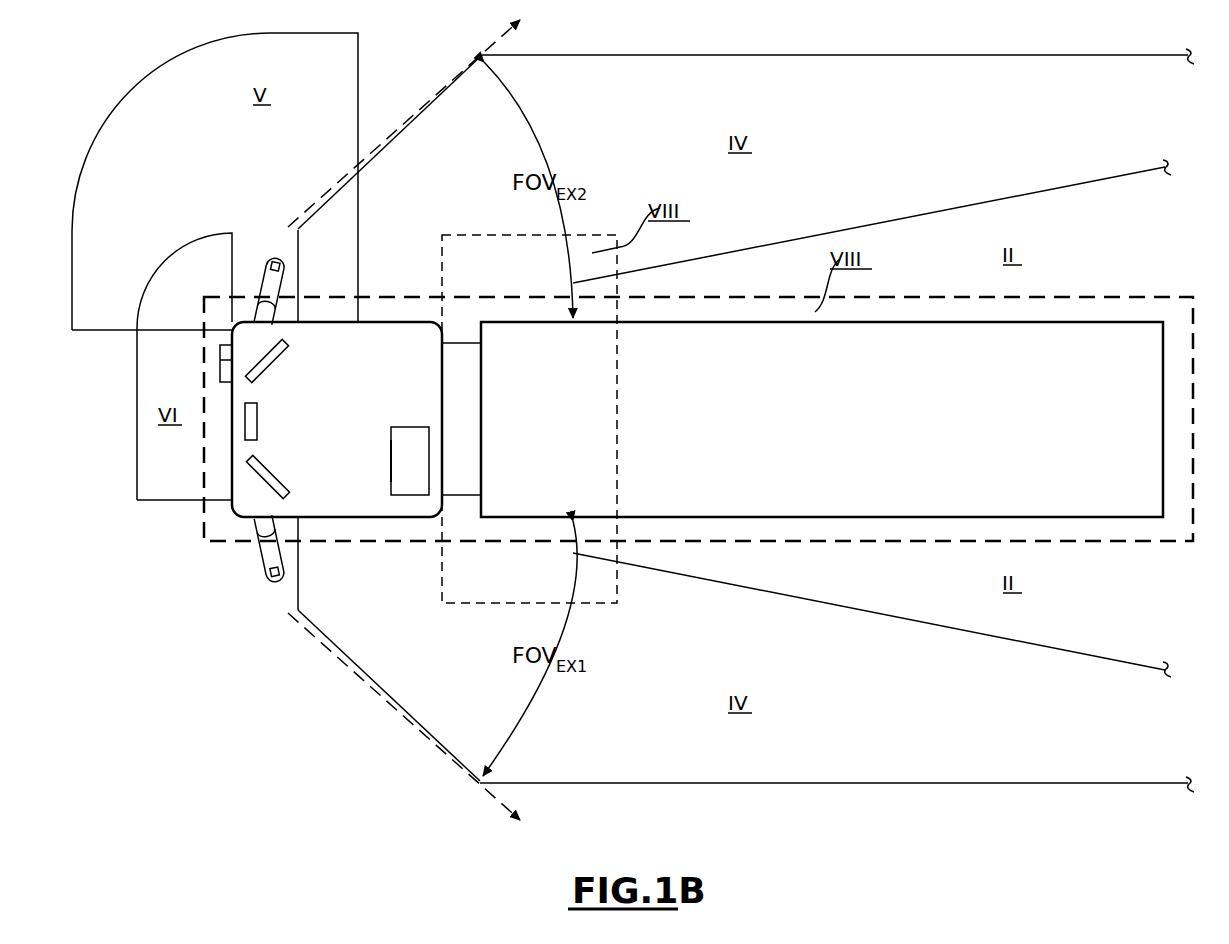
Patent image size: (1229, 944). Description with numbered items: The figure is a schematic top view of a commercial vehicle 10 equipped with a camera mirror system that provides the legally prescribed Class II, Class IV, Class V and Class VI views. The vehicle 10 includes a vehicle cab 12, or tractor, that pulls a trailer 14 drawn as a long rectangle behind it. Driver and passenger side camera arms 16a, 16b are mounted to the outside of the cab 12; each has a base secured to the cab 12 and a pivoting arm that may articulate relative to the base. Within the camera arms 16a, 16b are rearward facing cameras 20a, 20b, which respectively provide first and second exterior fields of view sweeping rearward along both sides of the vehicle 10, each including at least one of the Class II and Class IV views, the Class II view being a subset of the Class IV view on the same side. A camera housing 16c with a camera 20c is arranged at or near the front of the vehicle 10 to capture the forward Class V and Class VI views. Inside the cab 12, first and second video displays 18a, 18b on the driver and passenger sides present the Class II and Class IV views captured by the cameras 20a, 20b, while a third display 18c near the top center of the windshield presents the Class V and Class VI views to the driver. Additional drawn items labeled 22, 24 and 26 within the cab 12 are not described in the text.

The commercial vehicle 10 is at (204, 310).
The vehicle cab 12 is at (307, 404).
The trailer 14 is at (1073, 320).
The driver side camera arm 16a is at (275, 556).
The passenger side camera arm 16b is at (261, 266).
The camera housing 16c is at (187, 366).
The first video display 18a is at (283, 480).
The second video display 18b is at (283, 368).
The third display 18c is at (245, 420).
The rearward facing camera 20a is at (283, 571).
The rearward facing camera 20b is at (312, 257).
The camera 20c is at (222, 350).
The housing 22 is at (382, 346).
The interface 24 is at (383, 453).
The controller 26 is at (410, 438).